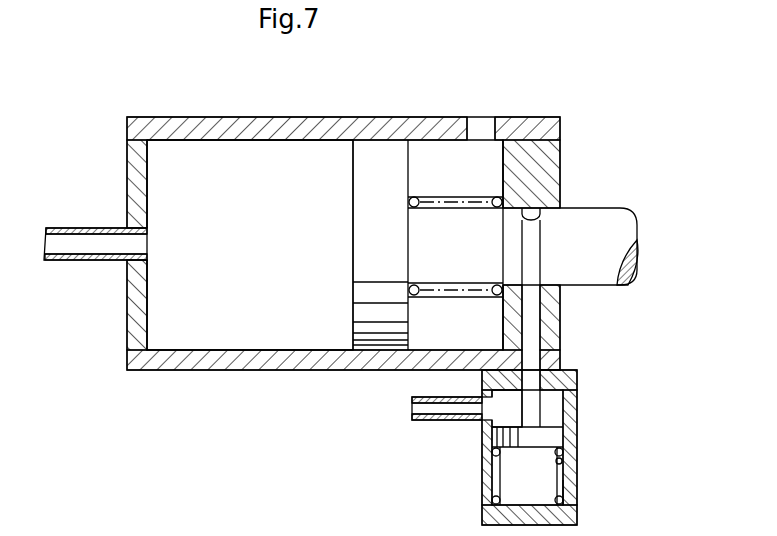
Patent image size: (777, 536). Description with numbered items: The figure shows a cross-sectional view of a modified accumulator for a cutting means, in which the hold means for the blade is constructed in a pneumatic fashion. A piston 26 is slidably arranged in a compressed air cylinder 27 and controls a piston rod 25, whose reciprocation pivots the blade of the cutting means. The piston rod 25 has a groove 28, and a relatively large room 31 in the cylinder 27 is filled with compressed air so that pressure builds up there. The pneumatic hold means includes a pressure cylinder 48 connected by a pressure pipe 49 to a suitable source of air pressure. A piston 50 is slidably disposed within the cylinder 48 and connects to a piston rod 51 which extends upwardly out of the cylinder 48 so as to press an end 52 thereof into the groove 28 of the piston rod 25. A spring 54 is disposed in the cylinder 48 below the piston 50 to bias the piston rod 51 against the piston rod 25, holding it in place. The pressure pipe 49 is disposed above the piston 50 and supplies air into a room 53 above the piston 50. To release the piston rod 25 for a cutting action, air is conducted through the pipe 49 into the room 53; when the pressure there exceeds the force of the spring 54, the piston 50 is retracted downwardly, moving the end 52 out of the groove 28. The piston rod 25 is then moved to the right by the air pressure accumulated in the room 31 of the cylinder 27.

The piston rod 25 is at (598, 222).
The piston 26 is at (380, 165).
The compressed air cylinder 27 is at (257, 132).
The groove 28 is at (528, 257).
The room 31 is at (250, 245).
The pressure cylinder 48 is at (572, 472).
The pressure pipe 49 is at (423, 418).
The piston 50 is at (550, 437).
The piston rod 51 is at (531, 402).
The end of piston rod 52 is at (543, 292).
The room 53 is at (493, 422).
The spring 54 is at (575, 490).